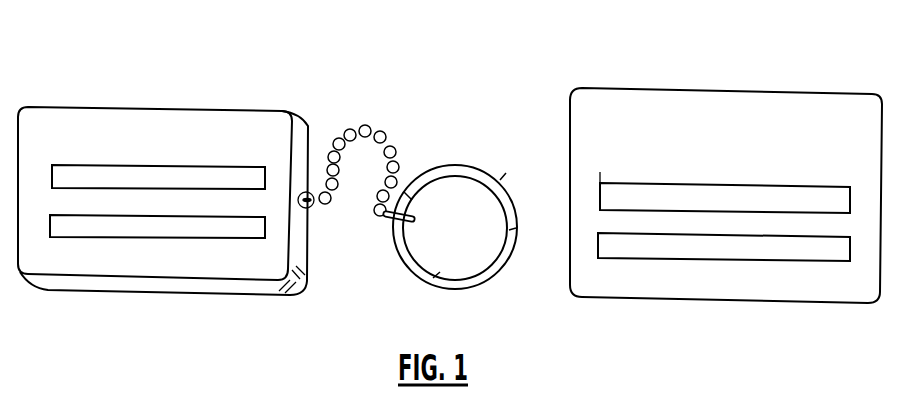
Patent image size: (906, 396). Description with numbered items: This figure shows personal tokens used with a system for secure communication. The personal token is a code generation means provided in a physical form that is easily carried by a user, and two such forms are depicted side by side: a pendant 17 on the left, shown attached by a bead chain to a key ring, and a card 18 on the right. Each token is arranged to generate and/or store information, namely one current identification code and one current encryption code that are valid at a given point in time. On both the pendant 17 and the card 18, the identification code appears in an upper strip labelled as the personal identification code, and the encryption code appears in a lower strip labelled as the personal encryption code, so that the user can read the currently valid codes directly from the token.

The pendant 17 is at (190, 120).
The card 18 is at (678, 103).